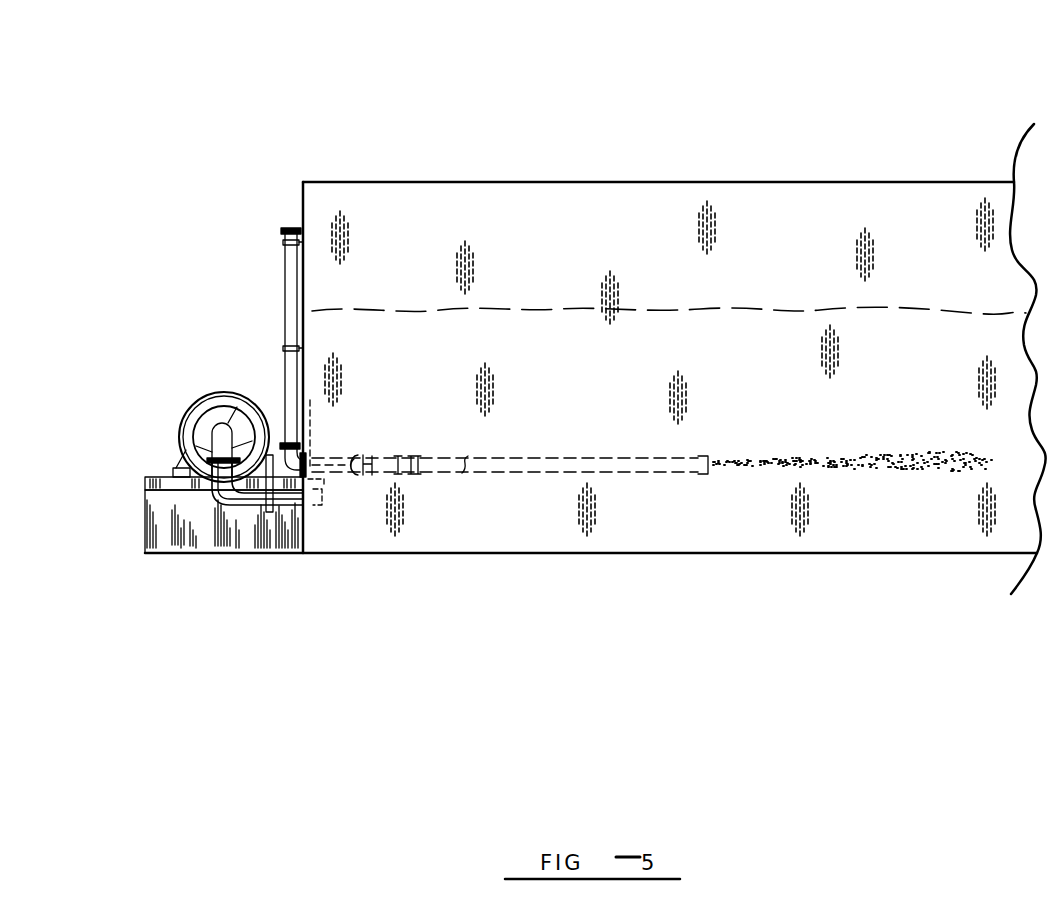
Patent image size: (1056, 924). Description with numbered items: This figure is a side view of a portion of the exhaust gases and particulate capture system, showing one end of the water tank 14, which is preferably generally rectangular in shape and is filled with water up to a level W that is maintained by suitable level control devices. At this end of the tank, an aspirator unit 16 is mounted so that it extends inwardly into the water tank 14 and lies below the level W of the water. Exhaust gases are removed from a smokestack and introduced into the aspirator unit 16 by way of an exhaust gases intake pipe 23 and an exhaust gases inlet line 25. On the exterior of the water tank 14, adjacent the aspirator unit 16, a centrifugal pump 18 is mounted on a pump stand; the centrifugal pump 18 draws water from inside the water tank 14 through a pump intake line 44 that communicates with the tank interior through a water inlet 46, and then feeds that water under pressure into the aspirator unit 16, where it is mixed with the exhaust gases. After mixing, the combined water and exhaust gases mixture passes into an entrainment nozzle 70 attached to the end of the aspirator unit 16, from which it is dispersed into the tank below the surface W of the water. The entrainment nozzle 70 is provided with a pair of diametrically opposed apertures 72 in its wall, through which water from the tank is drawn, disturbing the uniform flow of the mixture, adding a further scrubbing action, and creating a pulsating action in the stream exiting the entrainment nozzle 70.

The water tank 14 is at (477, 197).
The water level W is at (743, 312).
The exhaust gases intake pipe 23 is at (290, 322).
The centrifugal pump 18 is at (190, 433).
The exhaust gases inlet line 25 is at (339, 476).
The aspirator unit 16 is at (608, 390).
The pump intake line 44 is at (232, 503).
The water inlet 46 is at (318, 503).
The apertures 72 is at (465, 474).
The entrainment nozzle 70 is at (683, 474).